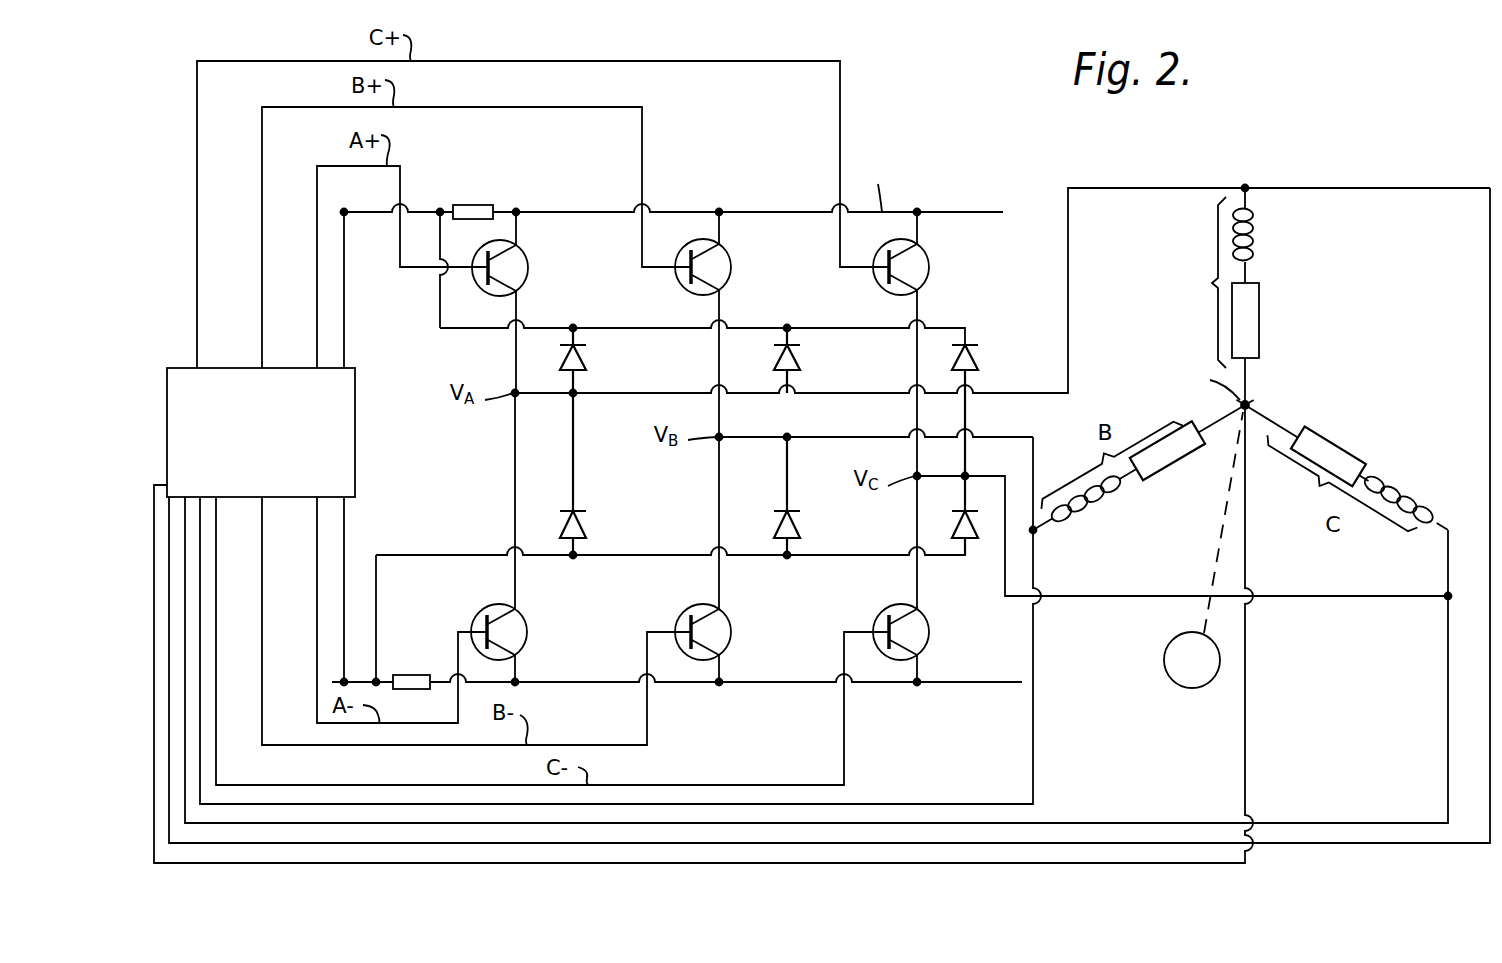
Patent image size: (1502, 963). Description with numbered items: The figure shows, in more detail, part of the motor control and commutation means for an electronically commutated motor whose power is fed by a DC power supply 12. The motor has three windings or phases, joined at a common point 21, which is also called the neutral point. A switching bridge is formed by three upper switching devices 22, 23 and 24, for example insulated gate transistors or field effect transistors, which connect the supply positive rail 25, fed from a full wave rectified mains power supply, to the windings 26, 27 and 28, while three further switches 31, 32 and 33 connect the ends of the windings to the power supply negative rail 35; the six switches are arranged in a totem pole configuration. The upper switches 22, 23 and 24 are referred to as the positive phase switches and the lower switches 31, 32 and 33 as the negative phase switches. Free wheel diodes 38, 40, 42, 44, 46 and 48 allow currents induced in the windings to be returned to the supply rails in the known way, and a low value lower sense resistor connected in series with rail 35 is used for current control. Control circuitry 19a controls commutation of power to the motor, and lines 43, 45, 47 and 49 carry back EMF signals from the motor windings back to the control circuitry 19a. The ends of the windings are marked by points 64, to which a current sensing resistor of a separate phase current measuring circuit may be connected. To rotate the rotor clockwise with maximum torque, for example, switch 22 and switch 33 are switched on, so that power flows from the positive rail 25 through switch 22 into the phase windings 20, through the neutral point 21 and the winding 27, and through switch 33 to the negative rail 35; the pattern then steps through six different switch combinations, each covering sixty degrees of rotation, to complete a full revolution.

The DC power supply 12 is at (1203, 550).
The control circuitry 19a is at (279, 478).
The A phase windings 20 is at (1275, 288).
The common point 21 is at (1250, 398).
The switching device 22 is at (526, 276).
The switching device 23 is at (731, 276).
The switching device 24 is at (929, 276).
The supply positive rail 25 is at (686, 212).
The winding 26 is at (1260, 326).
The winding 27 is at (1328, 456).
The winding 28 is at (1167, 450).
The switch 31 is at (492, 606).
The switch 32 is at (694, 606).
The switch 33 is at (892, 606).
The power supply negative rail 35 is at (688, 684).
The free wheel diode 38 is at (586, 356).
The free wheel diode 40 is at (800, 356).
The free wheel diode 42 is at (978, 357).
The line 43 is at (1035, 781).
The free wheel diode 44 is at (586, 520).
The line 45 is at (1247, 781).
The free wheel diode 46 is at (800, 520).
The line 47 is at (1445, 764).
The free wheel diode 48 is at (984, 540).
The line 49 is at (1489, 795).
The point 64 is at (1245, 188).